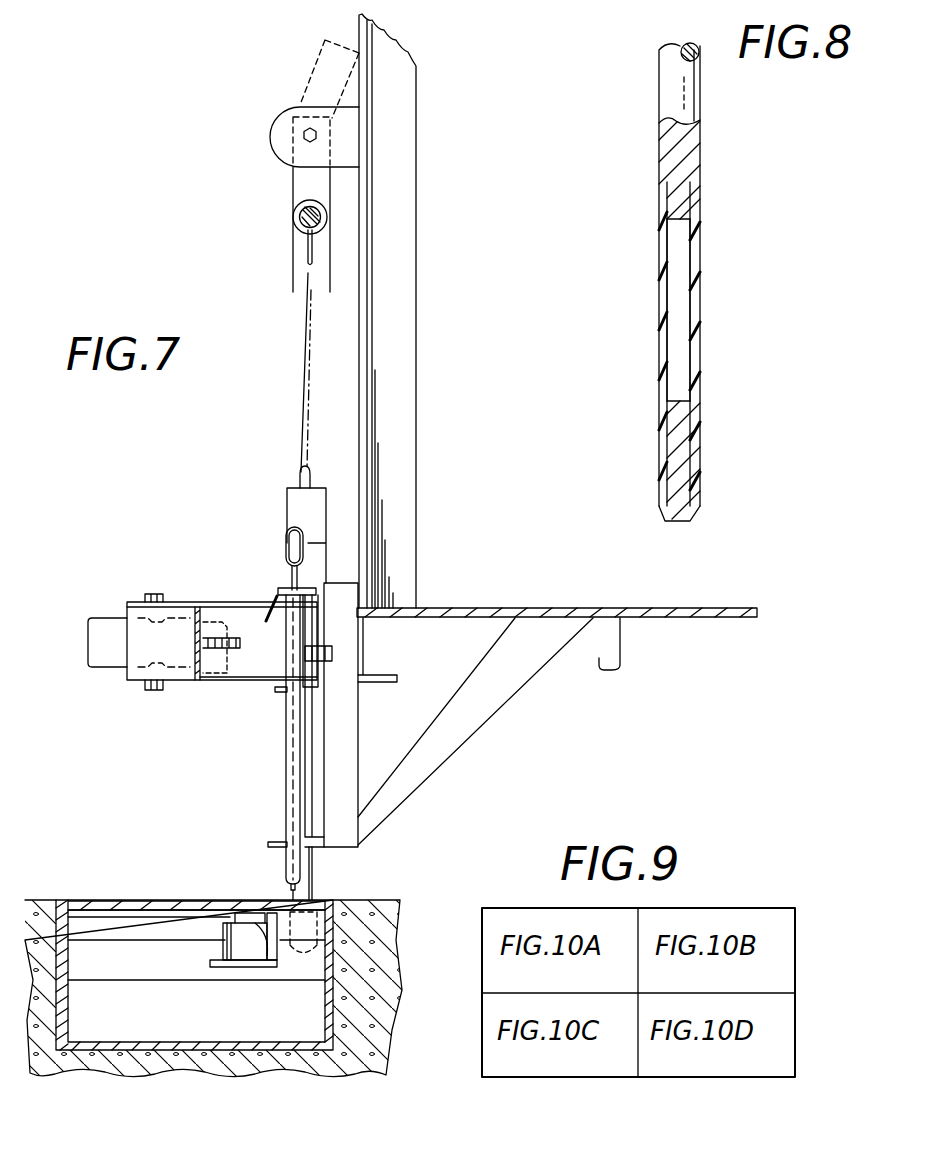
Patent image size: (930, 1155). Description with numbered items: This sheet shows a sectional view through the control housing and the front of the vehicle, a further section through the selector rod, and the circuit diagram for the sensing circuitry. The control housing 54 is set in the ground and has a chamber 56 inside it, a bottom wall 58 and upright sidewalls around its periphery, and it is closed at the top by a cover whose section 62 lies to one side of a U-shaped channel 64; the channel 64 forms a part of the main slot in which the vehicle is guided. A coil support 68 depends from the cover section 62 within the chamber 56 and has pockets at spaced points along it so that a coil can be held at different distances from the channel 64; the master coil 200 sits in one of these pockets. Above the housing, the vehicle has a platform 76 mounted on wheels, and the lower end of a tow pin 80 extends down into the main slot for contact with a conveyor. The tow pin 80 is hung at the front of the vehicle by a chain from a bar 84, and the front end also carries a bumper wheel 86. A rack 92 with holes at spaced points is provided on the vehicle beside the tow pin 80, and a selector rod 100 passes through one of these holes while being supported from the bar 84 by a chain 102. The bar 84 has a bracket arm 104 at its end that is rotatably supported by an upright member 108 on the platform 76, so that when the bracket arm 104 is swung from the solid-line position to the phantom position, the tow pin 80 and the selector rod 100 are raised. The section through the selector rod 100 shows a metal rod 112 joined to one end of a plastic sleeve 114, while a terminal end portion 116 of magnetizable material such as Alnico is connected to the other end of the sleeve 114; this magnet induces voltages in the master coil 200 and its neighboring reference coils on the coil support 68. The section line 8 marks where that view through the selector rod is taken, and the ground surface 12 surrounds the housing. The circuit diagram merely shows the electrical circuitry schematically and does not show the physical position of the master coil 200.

In FIG. 7, the section line 8 is at (307, 705).
In FIG. 7, the ground surface 12 is at (40, 900).
In FIG. 7, the control housing 54 is at (173, 898).
In FIG. 7, the chamber 56 is at (197, 1030).
In FIG. 7, the bottom wall 58 is at (167, 1042).
In FIG. 7, the cover section 62 is at (100, 900).
In FIG. 7, the U-shaped channel 64 is at (88, 963).
In FIG. 7, the coil support 68 is at (220, 967).
In FIG. 7, the platform 76 is at (547, 607).
In FIG. 7, the tow pin 80 is at (312, 873).
In FIG. 7, the bar 84 is at (298, 217).
In FIG. 7, the bumper wheel 86 is at (103, 617).
In FIG. 7, the rack 92 is at (273, 597).
In FIG. 7, the selector rod 100 is at (286, 787).
In FIG. 8, the selector rod 100 is at (657, 219).
In FIG. 7, the chain 102 is at (287, 537).
In FIG. 7, the bracket arm 104 is at (318, 72).
In FIG. 7, the upright member 108 is at (400, 268).
In FIG. 8, the metal rod 112 is at (682, 154).
In FIG. 8, the plastic sleeve 114 is at (692, 344).
In FIG. 8, the terminal end portion 116 is at (682, 452).
In FIG. 7, the master coil 200 is at (260, 960).